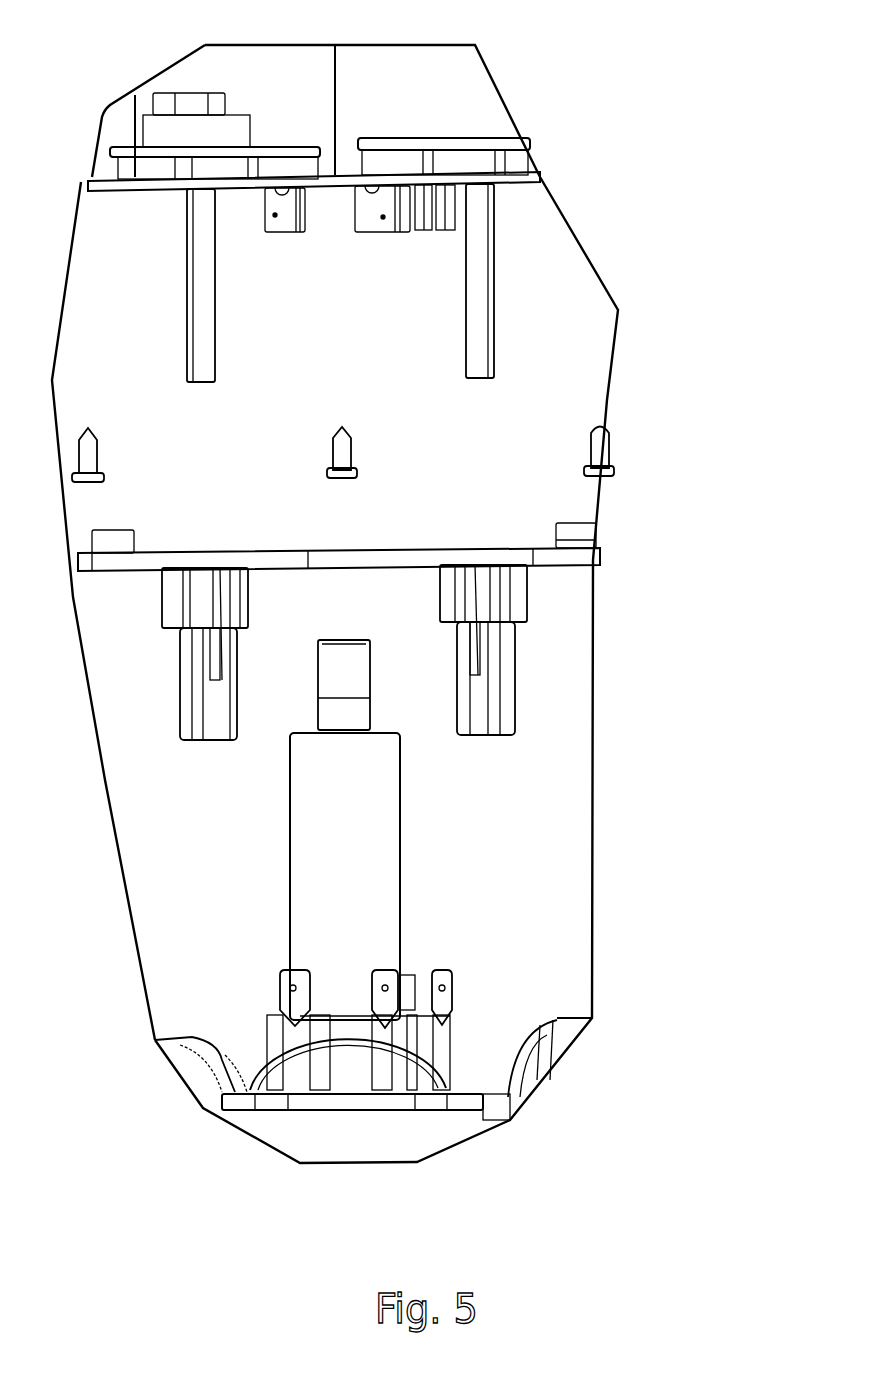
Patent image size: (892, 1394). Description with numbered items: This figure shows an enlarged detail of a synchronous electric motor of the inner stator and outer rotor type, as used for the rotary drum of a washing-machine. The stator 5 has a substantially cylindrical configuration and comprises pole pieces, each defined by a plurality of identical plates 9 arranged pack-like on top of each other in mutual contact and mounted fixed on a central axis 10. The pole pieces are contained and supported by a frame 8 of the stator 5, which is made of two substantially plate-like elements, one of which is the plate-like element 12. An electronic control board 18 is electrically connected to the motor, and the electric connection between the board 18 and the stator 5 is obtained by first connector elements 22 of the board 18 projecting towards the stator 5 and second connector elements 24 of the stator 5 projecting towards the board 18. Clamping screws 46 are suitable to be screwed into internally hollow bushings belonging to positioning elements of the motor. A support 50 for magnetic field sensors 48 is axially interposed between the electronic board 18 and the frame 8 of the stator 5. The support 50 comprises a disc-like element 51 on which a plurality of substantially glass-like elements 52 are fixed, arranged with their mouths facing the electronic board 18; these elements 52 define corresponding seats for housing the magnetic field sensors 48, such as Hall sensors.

The stator 5 is at (160, 1073).
The frame 8 is at (442, 1120).
The plates 9 is at (535, 1068).
The central axis 10 is at (370, 832).
The plate-like element 12 is at (330, 1105).
The electronic control board 18 is at (521, 180).
The first connector elements 22 is at (275, 215).
The second connector elements 24 is at (293, 990).
The clamping screws 46 is at (88, 460).
The magnetic field sensors 48 is at (205, 328).
The support 50 is at (364, 593).
The disc-like element 51 is at (280, 558).
The glass-like elements 52 is at (195, 680).